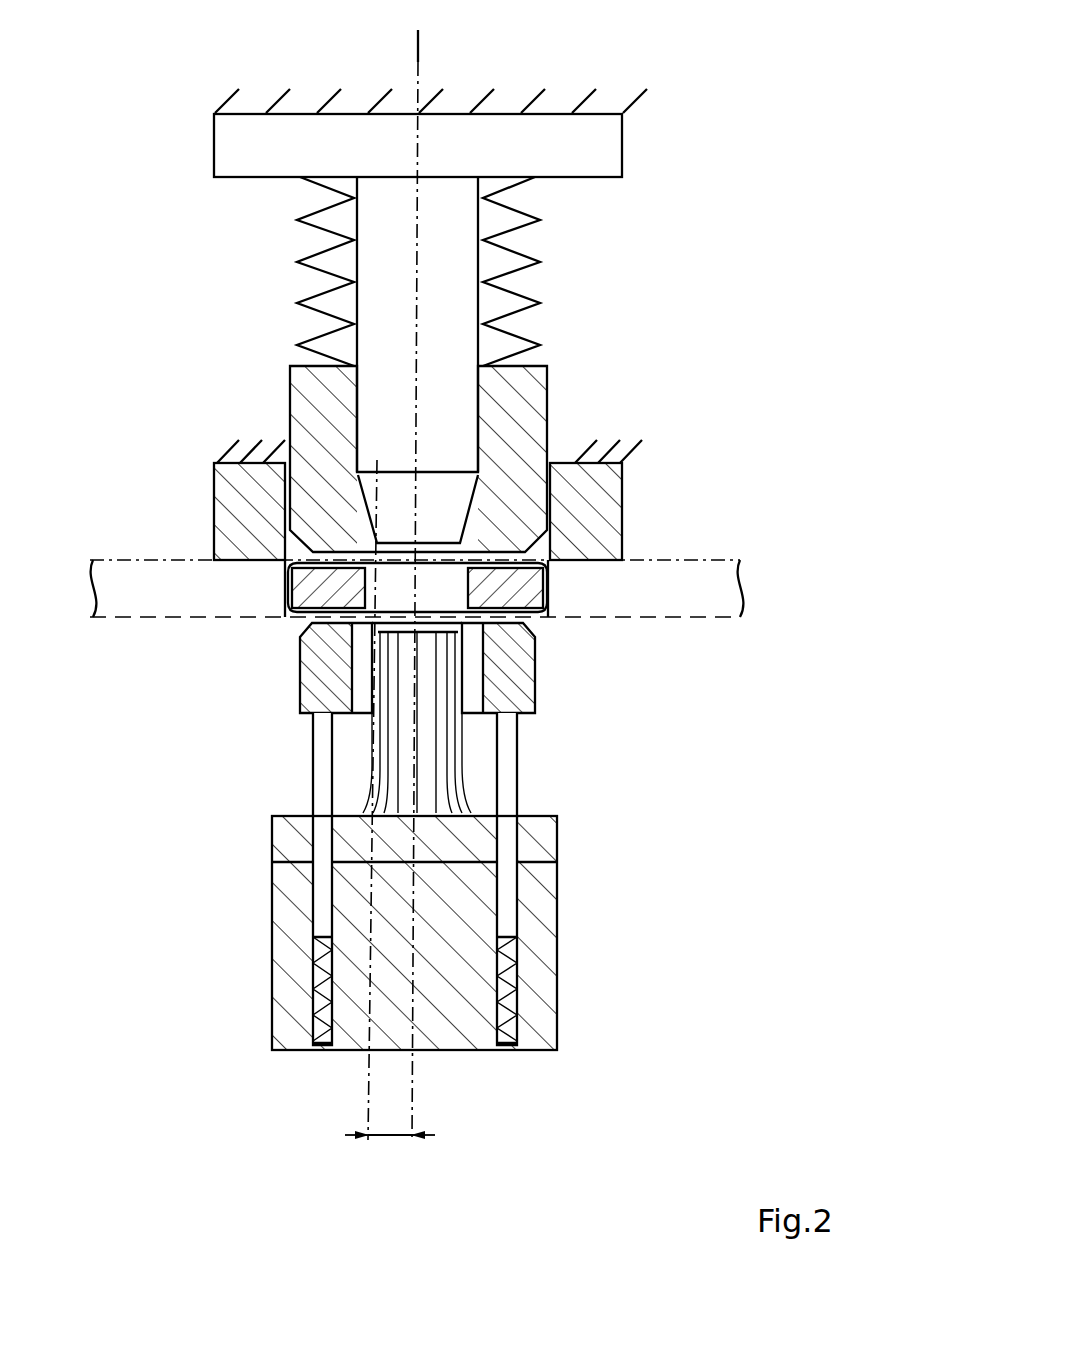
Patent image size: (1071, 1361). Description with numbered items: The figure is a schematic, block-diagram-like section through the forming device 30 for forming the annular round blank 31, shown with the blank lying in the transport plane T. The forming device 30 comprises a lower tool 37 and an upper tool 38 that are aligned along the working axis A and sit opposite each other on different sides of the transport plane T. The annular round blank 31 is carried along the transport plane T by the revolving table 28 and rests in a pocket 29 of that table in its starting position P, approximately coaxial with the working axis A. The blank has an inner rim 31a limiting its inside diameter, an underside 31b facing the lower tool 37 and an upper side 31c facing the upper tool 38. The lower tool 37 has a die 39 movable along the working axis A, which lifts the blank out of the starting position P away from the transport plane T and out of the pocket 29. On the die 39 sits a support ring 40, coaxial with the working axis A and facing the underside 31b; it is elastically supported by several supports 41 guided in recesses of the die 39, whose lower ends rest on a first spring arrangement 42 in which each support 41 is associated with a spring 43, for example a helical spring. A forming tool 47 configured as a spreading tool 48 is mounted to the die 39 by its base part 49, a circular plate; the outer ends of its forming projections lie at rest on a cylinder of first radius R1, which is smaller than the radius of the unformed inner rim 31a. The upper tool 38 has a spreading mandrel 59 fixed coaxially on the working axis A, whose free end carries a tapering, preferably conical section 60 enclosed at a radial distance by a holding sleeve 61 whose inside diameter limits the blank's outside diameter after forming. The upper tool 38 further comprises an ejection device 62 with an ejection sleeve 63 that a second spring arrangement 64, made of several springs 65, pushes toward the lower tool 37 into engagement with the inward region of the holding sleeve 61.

The forming device 30 is at (508, 179).
The working axis A is at (418, 60).
The spreading mandrel 59 is at (456, 262).
The springs 65 is at (407, 271).
The second spring arrangement 64 is at (272, 300).
The ejection device 62 is at (628, 338).
The ejection sleeve 63 is at (327, 459).
The tapering section 60 is at (370, 522).
The holding sleeve 61 is at (612, 513).
The upper tool 38 is at (652, 395).
The starting position P is at (240, 590).
The transport plane T is at (653, 620).
The revolving table 28 is at (417, 624).
The pocket 29 is at (287, 593).
The annular round blank 31 is at (414, 602).
The inner rim 31a is at (467, 589).
The underside 31b is at (540, 619).
The upper side 31c is at (550, 562).
The support ring 40 is at (310, 702).
The lower tool 37 is at (627, 740).
The forming tool 47 is at (553, 718).
The spreading tool 48 is at (485, 760).
The base part 49 is at (543, 833).
The die 39 is at (490, 881).
The supports 41 is at (407, 905).
The first spring arrangement 42 is at (335, 988).
The spring 43 is at (313, 963).
The first radius R1 is at (390, 800).